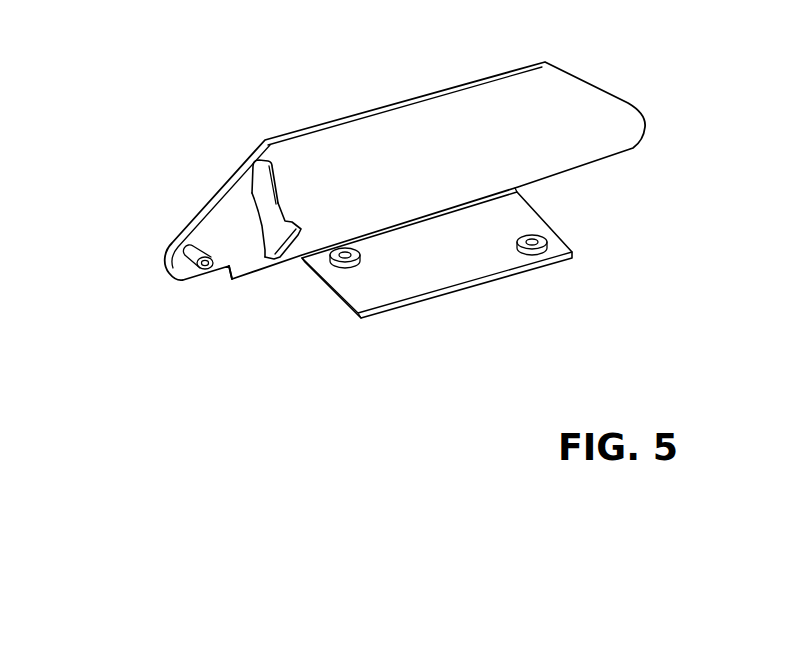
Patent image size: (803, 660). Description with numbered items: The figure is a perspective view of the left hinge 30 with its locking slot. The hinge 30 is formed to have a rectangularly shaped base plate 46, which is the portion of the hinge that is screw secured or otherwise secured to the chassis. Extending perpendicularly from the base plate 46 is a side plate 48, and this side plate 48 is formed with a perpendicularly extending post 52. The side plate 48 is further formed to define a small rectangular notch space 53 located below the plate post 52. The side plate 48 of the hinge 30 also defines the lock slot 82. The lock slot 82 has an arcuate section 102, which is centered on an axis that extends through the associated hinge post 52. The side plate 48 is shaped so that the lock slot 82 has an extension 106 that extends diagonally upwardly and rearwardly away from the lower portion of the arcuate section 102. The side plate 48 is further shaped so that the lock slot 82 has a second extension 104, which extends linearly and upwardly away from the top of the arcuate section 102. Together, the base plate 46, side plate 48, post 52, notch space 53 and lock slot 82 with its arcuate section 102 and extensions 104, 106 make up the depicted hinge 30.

The hinge 30 is at (197, 89).
The side plate 48 is at (462, 157).
The base plate 46 is at (443, 272).
The post 52 is at (196, 263).
The notch space 53 is at (204, 281).
The lock slot 82 is at (283, 198).
The extension 104 is at (246, 185).
The arcuate section 102 is at (262, 228).
The extension 106 is at (300, 224).